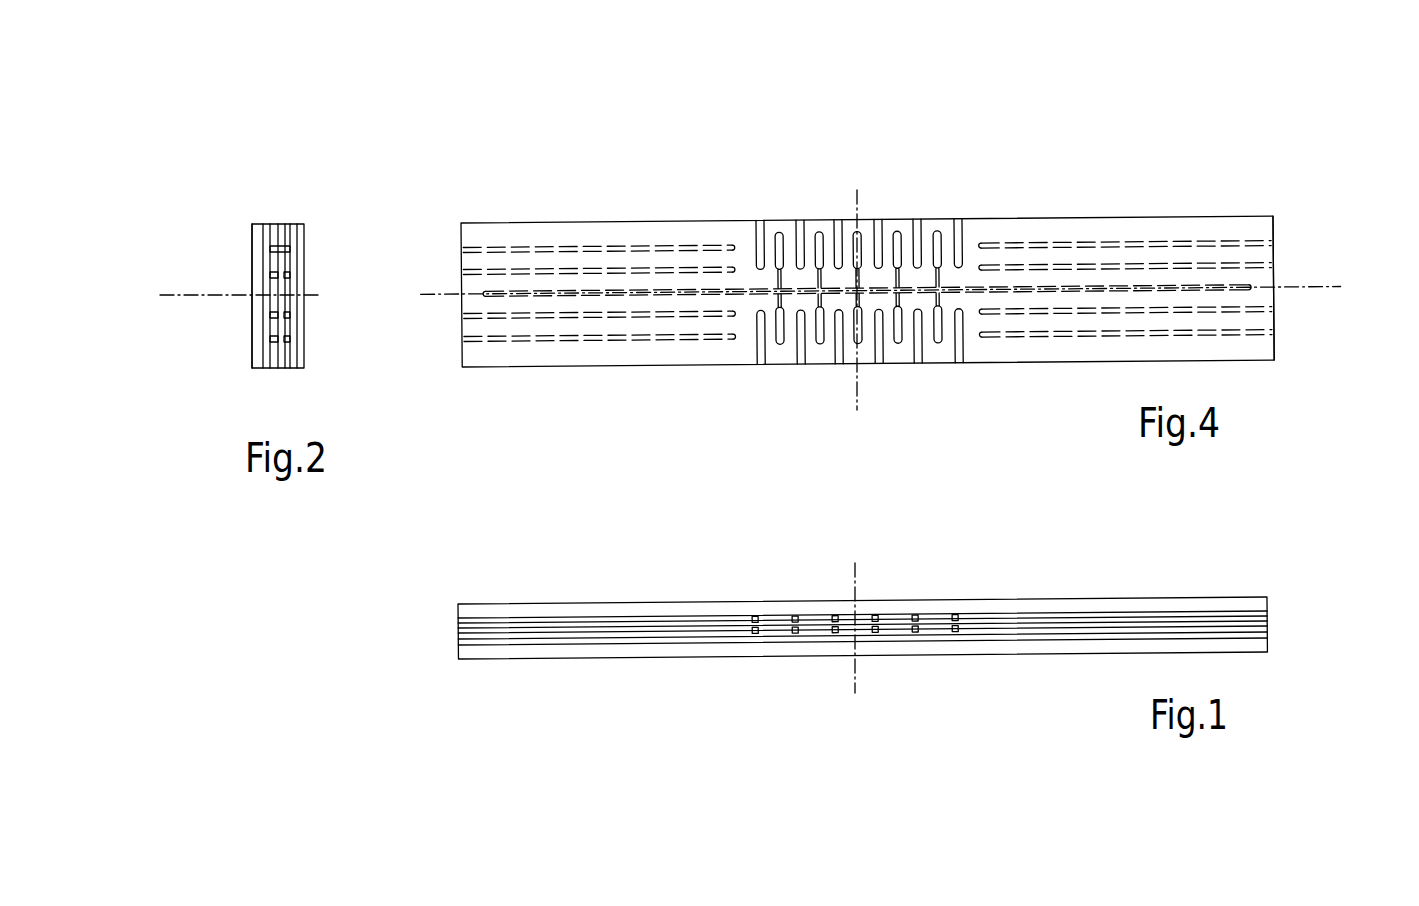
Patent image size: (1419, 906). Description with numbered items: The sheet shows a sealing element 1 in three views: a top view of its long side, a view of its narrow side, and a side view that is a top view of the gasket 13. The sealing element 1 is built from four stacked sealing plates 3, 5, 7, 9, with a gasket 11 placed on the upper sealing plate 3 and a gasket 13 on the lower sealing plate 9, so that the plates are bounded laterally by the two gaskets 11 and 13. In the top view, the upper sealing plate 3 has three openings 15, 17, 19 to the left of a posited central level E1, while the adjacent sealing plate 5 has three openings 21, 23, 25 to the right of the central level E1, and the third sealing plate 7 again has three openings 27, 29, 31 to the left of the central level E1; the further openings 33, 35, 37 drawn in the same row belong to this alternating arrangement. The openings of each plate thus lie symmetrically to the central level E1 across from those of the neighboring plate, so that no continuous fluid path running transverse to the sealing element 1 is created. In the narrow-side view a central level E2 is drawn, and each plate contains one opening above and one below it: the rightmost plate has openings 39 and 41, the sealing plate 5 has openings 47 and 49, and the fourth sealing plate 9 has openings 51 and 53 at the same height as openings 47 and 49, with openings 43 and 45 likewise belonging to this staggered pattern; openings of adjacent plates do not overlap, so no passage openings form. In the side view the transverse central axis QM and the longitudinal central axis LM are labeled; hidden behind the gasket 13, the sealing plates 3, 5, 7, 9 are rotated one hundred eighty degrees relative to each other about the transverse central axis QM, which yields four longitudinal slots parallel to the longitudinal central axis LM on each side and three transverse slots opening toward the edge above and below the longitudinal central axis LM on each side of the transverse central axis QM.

In FIG. 2, the sealing element 1 is at (304, 201).
In FIG. 4, the sealing element 1 is at (1258, 178).
In FIG. 1, the sealing element 1 is at (418, 612).
In FIG. 2, the upper sealing plate 3 is at (287, 369).
In FIG. 1, the upper sealing plate 3 is at (1270, 616).
In FIG. 2, the sealing plate 5 is at (287, 224).
In FIG. 1, the sealing plate 5 is at (1270, 623).
In FIG. 2, the sealing plate 7 is at (273, 369).
In FIG. 1, the sealing plate 7 is at (457, 633).
In FIG. 2, the lower sealing plate 9 is at (268, 224).
In FIG. 1, the lower sealing plate 9 is at (457, 643).
In FIG. 2, the gasket 11 is at (306, 224).
In FIG. 1, the gasket 11 is at (538, 615).
In FIG. 2, the gasket 13 is at (252, 224).
In FIG. 4, the gasket 13 is at (1257, 338).
In FIG. 1, the gasket 13 is at (533, 650).
In FIG. 1, the opening 15 is at (755, 620).
In FIG. 1, the opening 17 is at (795, 620).
In FIG. 1, the opening 19 is at (836, 620).
In FIG. 1, the opening 21 is at (877, 620).
In FIG. 1, the opening 23 is at (918, 620).
In FIG. 1, the opening 25 is at (957, 619).
In FIG. 1, the opening 27 is at (755, 636).
In FIG. 1, the opening 29 is at (795, 636).
In FIG. 1, the opening 31 is at (835, 636).
In FIG. 1, the tenth slot 33 is at (874, 636).
In FIG. 1, the eleventh slot 35 is at (915, 636).
In FIG. 1, the twelfth slot 37 is at (957, 636).
In FIG. 2, the opening 39 is at (287, 342).
In FIG. 2, the opening 41 is at (305, 266).
In FIG. 2, the cavity 43 is at (273, 342).
In FIG. 2, the cavity 45 is at (252, 278).
In FIG. 2, the opening 47 is at (290, 313).
In FIG. 2, the opening 49 is at (305, 238).
In FIG. 2, the opening 51 is at (262, 313).
In FIG. 2, the opening 53 is at (252, 253).
In FIG. 1, the central level E1 is at (856, 583).
In FIG. 2, the central level E2 is at (183, 296).
In FIG. 4, the transverse central axis QM is at (862, 196).
In FIG. 4, the longitudinal central axis LM is at (1330, 278).